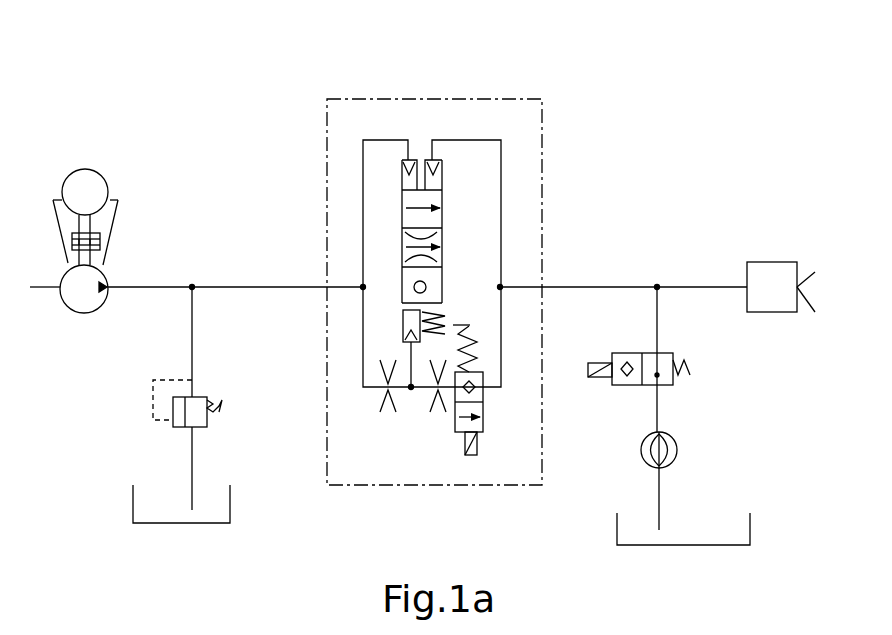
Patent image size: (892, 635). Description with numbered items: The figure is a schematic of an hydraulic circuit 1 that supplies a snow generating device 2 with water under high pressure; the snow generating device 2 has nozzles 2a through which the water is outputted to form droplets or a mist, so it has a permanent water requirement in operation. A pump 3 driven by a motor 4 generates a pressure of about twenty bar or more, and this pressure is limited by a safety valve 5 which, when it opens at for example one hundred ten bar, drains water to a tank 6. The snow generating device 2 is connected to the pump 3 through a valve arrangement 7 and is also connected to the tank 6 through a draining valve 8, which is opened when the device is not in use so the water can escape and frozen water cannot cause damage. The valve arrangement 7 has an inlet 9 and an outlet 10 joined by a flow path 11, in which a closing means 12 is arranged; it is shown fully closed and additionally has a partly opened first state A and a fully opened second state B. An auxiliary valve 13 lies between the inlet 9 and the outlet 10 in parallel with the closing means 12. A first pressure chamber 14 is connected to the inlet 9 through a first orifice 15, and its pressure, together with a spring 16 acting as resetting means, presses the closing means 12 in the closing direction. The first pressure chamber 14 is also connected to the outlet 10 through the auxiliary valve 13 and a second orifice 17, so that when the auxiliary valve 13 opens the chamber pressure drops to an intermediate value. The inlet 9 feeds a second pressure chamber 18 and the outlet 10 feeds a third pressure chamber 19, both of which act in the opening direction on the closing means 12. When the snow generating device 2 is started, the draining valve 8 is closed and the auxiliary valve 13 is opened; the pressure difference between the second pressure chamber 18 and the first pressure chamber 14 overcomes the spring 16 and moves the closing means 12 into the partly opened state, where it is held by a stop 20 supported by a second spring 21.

The hydraulic circuit 1 is at (242, 118).
The snow generating device 2 is at (762, 275).
The nozzles 2a is at (808, 268).
The pump 3 is at (82, 303).
The motor 4 is at (102, 185).
The safety valve 5 is at (220, 423).
The tank 6 is at (217, 508).
The valve arrangement 7 is at (435, 97).
The draining valve 8 is at (627, 390).
The inlet 9 is at (282, 282).
The outlet 10 is at (593, 285).
The flow path 11 is at (470, 285).
The closing means 12 is at (465, 200).
The auxiliary valve 13 is at (452, 425).
The first pressure chamber 14 is at (407, 323).
The first orifice 15 is at (383, 390).
The spring 16 is at (403, 315).
The second orifice 17 is at (431, 390).
The second pressure chamber 18 is at (347, 147).
The third pressure chamber 19 is at (463, 121).
The stop 20 is at (455, 325).
The second spring 21 is at (472, 333).